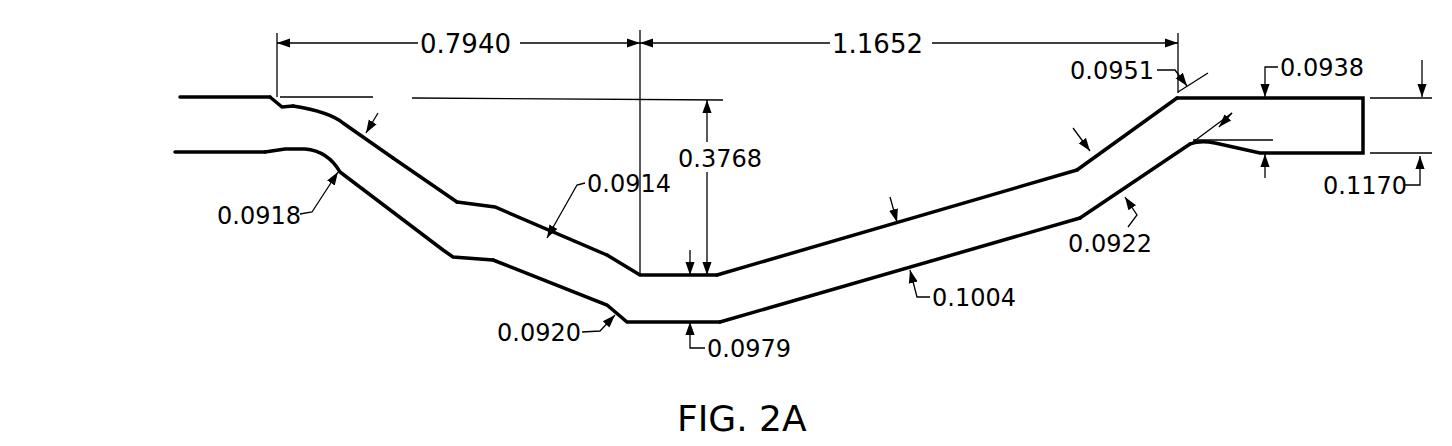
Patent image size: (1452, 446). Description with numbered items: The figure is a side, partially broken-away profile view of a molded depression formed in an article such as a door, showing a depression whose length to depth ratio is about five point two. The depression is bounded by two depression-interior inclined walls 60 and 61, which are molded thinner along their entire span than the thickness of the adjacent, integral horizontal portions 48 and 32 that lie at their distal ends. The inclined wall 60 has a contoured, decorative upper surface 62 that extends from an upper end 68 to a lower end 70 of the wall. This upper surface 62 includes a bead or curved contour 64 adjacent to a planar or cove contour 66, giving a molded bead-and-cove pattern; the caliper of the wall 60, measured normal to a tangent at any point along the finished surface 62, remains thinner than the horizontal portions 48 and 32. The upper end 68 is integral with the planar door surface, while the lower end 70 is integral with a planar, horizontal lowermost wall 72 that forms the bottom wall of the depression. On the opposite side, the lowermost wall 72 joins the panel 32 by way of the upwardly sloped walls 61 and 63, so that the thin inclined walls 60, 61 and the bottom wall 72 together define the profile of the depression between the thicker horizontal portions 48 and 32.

The horizontal portion 48 is at (228, 136).
The upper end 68 is at (282, 106).
The bead or curved contour 64 is at (337, 115).
The contoured upper surface 62 is at (415, 165).
The planar or cove contour 66 is at (504, 213).
The lower end 70 is at (642, 272).
The inclined wall 60 is at (473, 230).
The lowermost wall 72 is at (668, 303).
The upwardly sloped wall 61 is at (963, 237).
The upwardly sloped wall 63 is at (1120, 170).
The panel 32 is at (1278, 137).